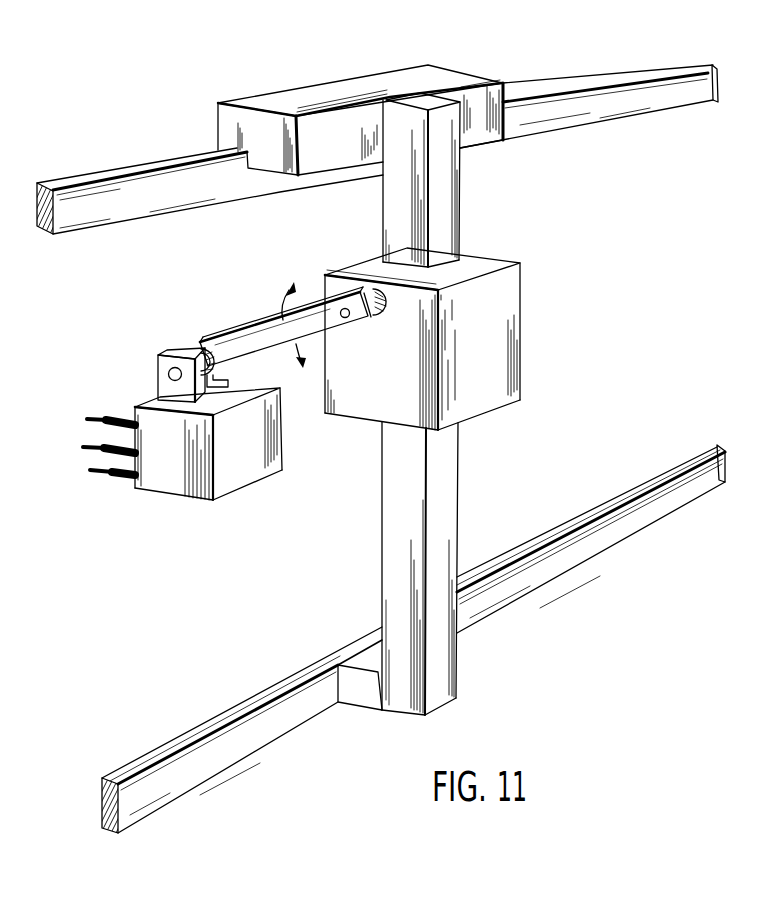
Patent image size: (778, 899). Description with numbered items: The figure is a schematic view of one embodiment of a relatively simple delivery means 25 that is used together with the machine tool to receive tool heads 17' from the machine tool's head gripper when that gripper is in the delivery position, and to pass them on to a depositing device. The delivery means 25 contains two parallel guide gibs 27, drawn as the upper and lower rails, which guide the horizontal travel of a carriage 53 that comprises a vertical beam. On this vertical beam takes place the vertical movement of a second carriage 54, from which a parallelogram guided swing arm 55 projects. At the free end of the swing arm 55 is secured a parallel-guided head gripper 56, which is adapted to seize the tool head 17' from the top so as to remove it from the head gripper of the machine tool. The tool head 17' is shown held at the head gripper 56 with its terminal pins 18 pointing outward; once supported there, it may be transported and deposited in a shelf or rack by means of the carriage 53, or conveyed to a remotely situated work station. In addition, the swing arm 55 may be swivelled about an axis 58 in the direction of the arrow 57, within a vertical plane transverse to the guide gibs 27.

The tool head 17' is at (208, 471).
The terminal pins 18 is at (120, 481).
The delivery means 25 is at (488, 60).
The parallel guide gibs 27 is at (607, 82).
The carriage 53 is at (447, 190).
The carriage 54 is at (507, 328).
The parallelogram guided swing arm 55 is at (263, 330).
The head gripper 56 is at (160, 372).
The arrow 57 is at (299, 303).
The axis 58 is at (344, 318).